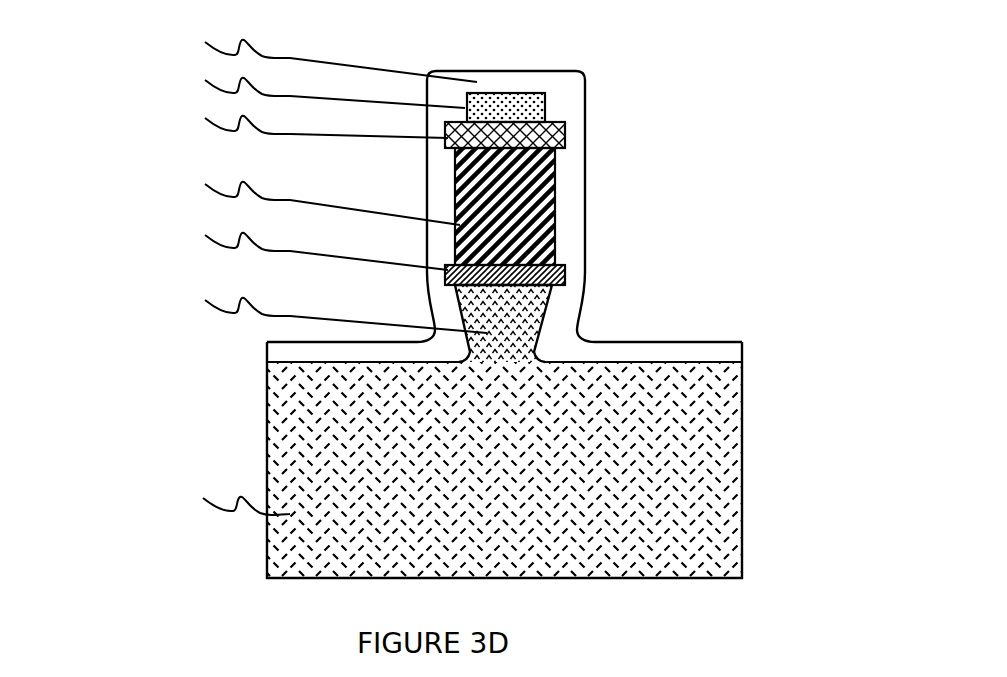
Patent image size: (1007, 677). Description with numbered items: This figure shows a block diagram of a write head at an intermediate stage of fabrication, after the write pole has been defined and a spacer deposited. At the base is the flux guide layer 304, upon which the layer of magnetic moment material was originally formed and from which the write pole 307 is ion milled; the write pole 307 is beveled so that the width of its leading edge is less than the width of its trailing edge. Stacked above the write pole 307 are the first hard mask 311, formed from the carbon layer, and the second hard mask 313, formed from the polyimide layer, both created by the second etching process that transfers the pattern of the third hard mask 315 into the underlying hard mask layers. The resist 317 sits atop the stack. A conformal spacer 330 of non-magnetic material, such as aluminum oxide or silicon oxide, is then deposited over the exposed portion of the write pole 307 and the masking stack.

The flux guide layer 304 is at (715, 513).
The write pole 307 is at (525, 328).
The first hard mask 311 is at (565, 272).
The second hard mask 313 is at (555, 225).
The third hard mask 315 is at (563, 140).
The resist layer 317 is at (542, 110).
The conformal spacer 330 is at (525, 82).